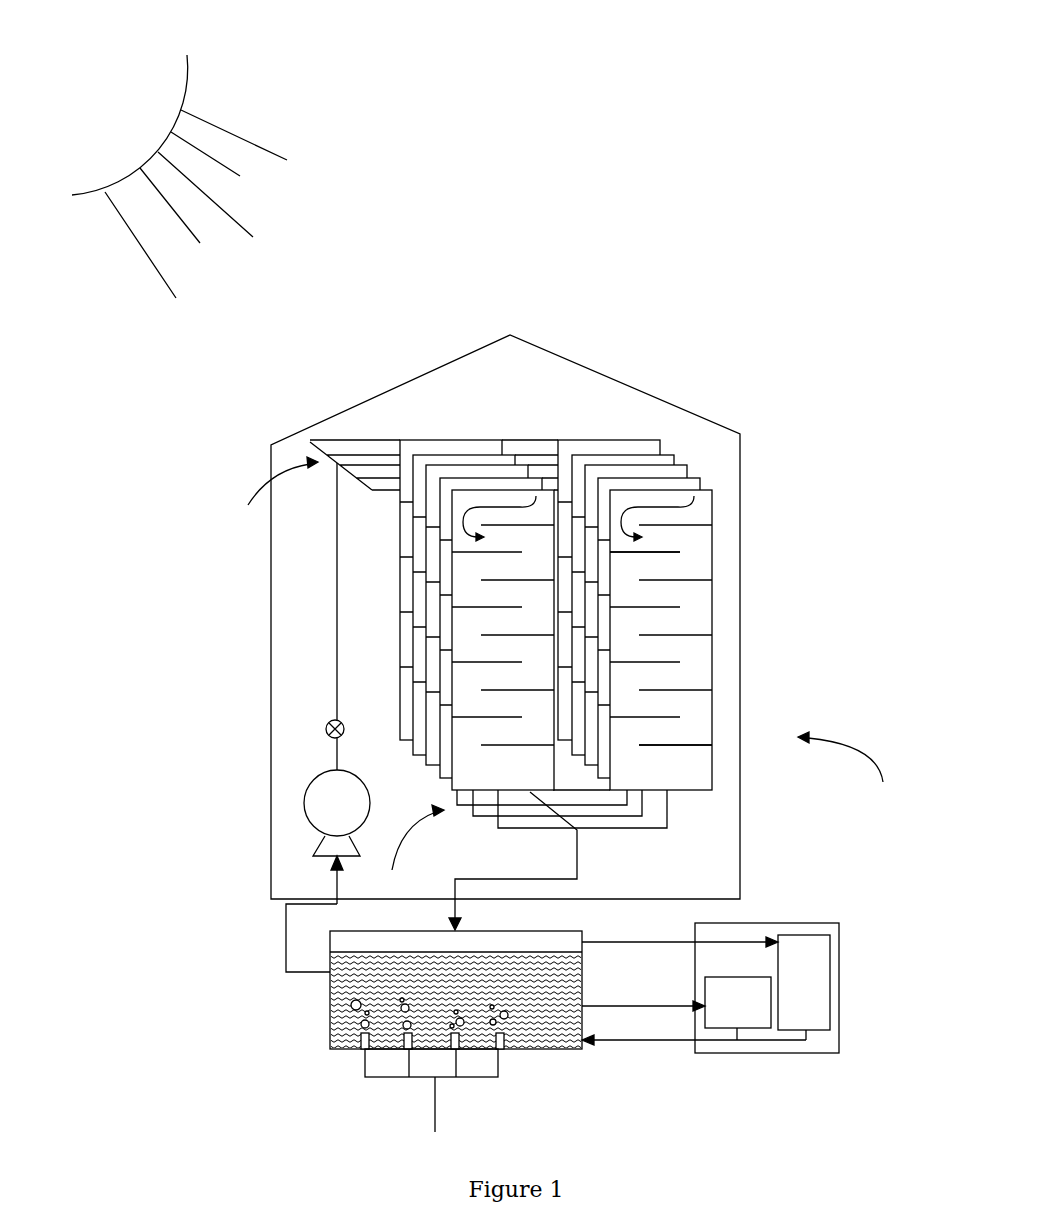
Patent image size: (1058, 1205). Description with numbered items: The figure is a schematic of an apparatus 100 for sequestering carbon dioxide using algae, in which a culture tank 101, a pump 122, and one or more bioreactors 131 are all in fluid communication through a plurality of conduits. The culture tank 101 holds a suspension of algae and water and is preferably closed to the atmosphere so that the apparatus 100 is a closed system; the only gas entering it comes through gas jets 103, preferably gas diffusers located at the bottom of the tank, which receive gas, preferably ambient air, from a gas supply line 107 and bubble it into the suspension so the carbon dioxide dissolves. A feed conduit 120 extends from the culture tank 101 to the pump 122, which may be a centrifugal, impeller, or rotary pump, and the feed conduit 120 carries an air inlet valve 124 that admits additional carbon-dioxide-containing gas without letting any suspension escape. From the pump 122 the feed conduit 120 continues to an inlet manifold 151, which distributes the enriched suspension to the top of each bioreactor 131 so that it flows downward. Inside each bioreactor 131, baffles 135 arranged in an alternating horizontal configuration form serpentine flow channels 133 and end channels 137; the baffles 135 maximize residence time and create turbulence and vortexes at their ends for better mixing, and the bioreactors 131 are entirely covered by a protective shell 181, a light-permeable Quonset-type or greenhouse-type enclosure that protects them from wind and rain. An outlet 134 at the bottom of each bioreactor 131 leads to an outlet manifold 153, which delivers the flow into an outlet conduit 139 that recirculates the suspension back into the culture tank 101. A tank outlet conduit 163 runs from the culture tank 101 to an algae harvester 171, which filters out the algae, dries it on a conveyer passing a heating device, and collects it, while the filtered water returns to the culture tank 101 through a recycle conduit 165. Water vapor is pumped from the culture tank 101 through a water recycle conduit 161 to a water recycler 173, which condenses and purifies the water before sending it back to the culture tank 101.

The apparatus 100 is at (853, 777).
The culture tank 101 is at (330, 1008).
The gas jets 103 is at (358, 1048).
The gas supply line 107 is at (434, 1107).
The feed conduit 120 is at (286, 918).
The pump 122 is at (305, 800).
The air inlet valve 124 is at (326, 725).
The bioreactors 131 is at (613, 615).
The flow channels 133 is at (713, 535).
The outlet 134 is at (670, 805).
The baffles 135 is at (675, 745).
The end channels 137 is at (682, 552).
The outlet conduit 139 is at (573, 859).
The inlet manifold 151 is at (265, 498).
The outlet manifold 153 is at (408, 848).
The water recycle conduit 161 is at (630, 940).
The tank outlet conduit 163 is at (608, 1007).
The recycle conduit 165 is at (630, 1040).
The algae harvester 171 is at (705, 990).
The water recycler 173 is at (831, 950).
The protective shell 181 is at (652, 393).